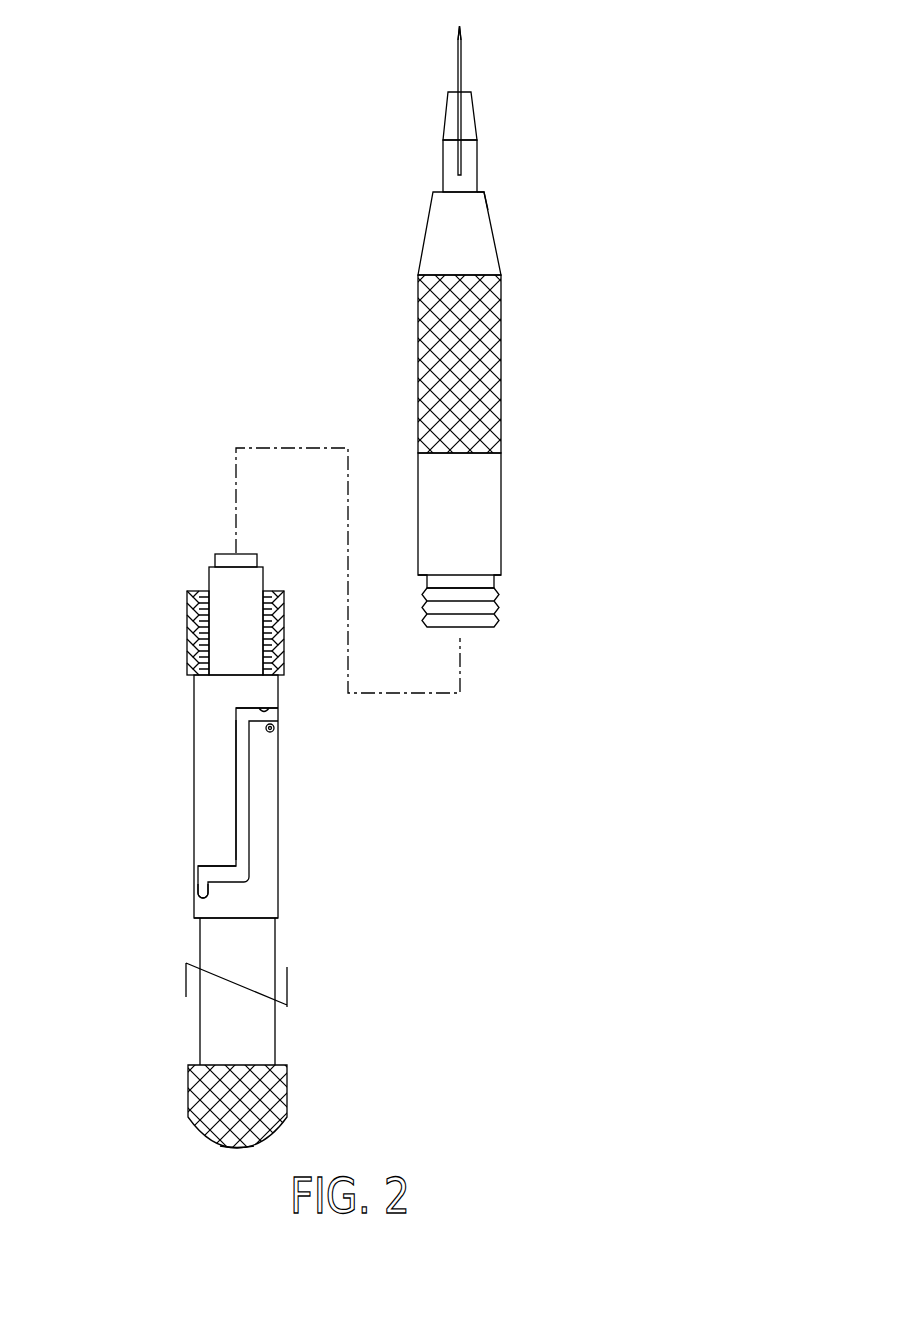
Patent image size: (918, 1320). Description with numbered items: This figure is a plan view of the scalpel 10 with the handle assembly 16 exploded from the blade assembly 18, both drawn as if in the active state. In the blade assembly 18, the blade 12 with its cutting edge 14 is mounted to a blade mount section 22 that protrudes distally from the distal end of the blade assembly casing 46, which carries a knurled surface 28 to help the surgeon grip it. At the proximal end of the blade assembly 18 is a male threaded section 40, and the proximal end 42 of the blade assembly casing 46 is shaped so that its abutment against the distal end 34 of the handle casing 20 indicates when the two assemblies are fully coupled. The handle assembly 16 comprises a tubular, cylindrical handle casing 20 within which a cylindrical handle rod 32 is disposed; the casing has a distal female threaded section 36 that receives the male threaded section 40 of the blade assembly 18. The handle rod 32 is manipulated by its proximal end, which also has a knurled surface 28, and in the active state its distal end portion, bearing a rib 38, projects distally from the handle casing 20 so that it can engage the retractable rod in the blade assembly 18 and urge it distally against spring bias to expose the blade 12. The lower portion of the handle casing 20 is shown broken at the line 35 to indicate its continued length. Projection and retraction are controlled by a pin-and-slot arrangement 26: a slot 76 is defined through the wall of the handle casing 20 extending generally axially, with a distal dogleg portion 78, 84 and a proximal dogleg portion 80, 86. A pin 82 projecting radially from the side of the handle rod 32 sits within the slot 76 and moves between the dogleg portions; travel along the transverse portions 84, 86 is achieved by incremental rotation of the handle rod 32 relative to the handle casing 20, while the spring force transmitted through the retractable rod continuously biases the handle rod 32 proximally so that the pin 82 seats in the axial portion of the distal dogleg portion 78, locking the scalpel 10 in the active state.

The scalpel 10 is at (203, 198).
The blade 12 is at (455, 80).
The cutting edge 14 is at (452, 27).
The handle assembly 16 is at (190, 437).
The blade assembly 18 is at (418, 323).
The handle casing 20 is at (193, 735).
The blade mount section 22 is at (440, 166).
The pin-and-slot arrangement 26 is at (252, 777).
The knurled surface 28 is at (190, 1097).
The handle rod 32 is at (208, 567).
The distal end of handle casing 34 is at (270, 592).
The housing bottom edge 35 is at (278, 918).
The distal female threaded section 36 is at (188, 621).
The rib 38 is at (220, 553).
The proximal male threaded section 40 is at (503, 616).
The proximal end of blade assembly casing 42 is at (502, 572).
The blade assembly casing 46 is at (497, 492).
The slot 76 is at (242, 797).
The distal dogleg portion 78 is at (278, 713).
The proximal dogleg portion 80 is at (205, 884).
The pin 82 is at (283, 729).
The transverse distal dogleg portion 84 is at (273, 705).
The transverse proximal dogleg portion 86 is at (217, 862).